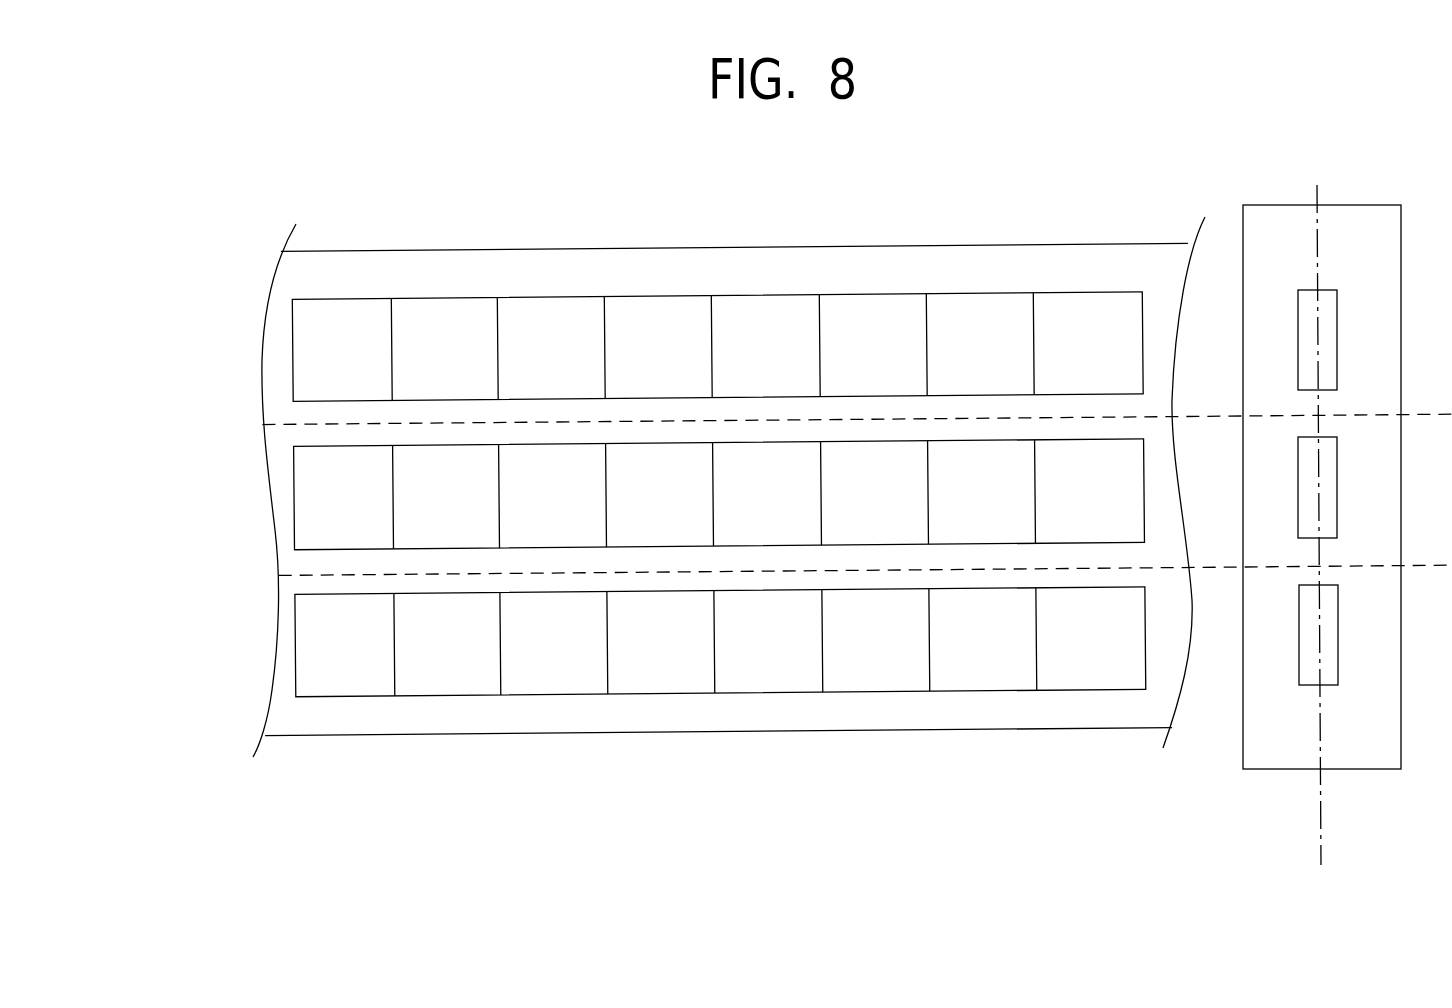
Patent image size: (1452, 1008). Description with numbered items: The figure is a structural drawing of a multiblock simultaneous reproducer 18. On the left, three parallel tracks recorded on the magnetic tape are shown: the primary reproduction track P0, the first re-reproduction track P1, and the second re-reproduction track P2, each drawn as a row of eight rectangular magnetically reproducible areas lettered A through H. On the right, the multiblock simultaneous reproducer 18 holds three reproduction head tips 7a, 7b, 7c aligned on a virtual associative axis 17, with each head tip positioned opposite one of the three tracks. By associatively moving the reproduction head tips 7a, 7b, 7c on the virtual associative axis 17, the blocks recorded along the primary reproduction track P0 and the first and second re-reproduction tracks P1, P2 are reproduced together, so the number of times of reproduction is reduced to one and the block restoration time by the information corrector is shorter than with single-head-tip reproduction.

The reproduction head tip 7a is at (1338, 313).
The reproduction head tip 7b is at (1338, 473).
The reproduction head tip 7c is at (1338, 631).
The virtual associative axis 17 is at (1322, 812).
The multiblock simultaneous reproducer 18 is at (1283, 804).
The first re-reproduction track P1 is at (294, 334).
The primary reproduction track P0 is at (294, 496).
The second re-reproduction track P2 is at (294, 656).